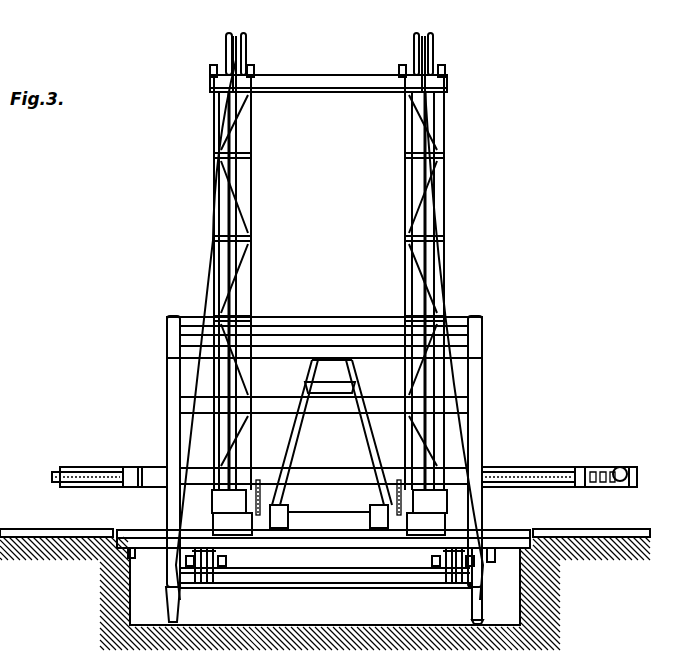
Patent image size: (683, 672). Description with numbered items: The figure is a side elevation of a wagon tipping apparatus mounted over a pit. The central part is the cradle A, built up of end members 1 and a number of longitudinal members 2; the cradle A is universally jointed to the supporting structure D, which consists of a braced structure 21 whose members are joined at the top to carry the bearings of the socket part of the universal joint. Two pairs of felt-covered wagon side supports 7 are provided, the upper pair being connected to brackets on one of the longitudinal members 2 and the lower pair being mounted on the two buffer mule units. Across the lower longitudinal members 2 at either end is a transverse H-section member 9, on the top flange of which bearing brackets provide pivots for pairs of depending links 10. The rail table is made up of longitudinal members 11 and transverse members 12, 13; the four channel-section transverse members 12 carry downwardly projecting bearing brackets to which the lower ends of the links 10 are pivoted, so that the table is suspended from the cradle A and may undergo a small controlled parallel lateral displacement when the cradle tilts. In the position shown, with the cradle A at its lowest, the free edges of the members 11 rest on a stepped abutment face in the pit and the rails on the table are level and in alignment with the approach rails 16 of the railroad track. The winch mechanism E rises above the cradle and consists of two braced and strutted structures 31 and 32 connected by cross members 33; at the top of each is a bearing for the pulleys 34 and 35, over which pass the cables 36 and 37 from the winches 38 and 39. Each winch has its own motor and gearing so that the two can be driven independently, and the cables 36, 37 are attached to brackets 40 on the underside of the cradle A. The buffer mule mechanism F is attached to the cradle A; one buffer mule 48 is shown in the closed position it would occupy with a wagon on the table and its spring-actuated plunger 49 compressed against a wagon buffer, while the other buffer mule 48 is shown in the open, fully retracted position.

The end member 1 is at (167, 370).
The longitudinal member 2 is at (312, 328).
The wagon side support 7 is at (172, 406).
The transverse H-section member 9 is at (204, 580).
The link 10 is at (217, 580).
The longitudinal member of rail table 11 is at (341, 548).
The transverse member 12 is at (187, 548).
The transverse member 13 is at (319, 512).
The approach rail 16 is at (66, 530).
The braced structure 21 is at (306, 436).
The braced and strutted structure 31 is at (444, 186).
The braced and strutted structure 32 is at (216, 178).
The cross member 33 is at (324, 77).
The pulley 34 is at (432, 45).
The pulley 35 is at (244, 45).
The cable 36 is at (436, 141).
The cable 37 is at (238, 141).
The winch 38 is at (422, 507).
The winch 39 is at (236, 507).
The bracket 40 is at (166, 602).
The buffer mule 48 is at (133, 467).
The spring-actuated plunger 49 is at (622, 480).
The cradle A is at (482, 364).
The supporting structure D is at (360, 438).
The winch mechanism E is at (345, 88).
The buffer mule mechanism F is at (94, 466).